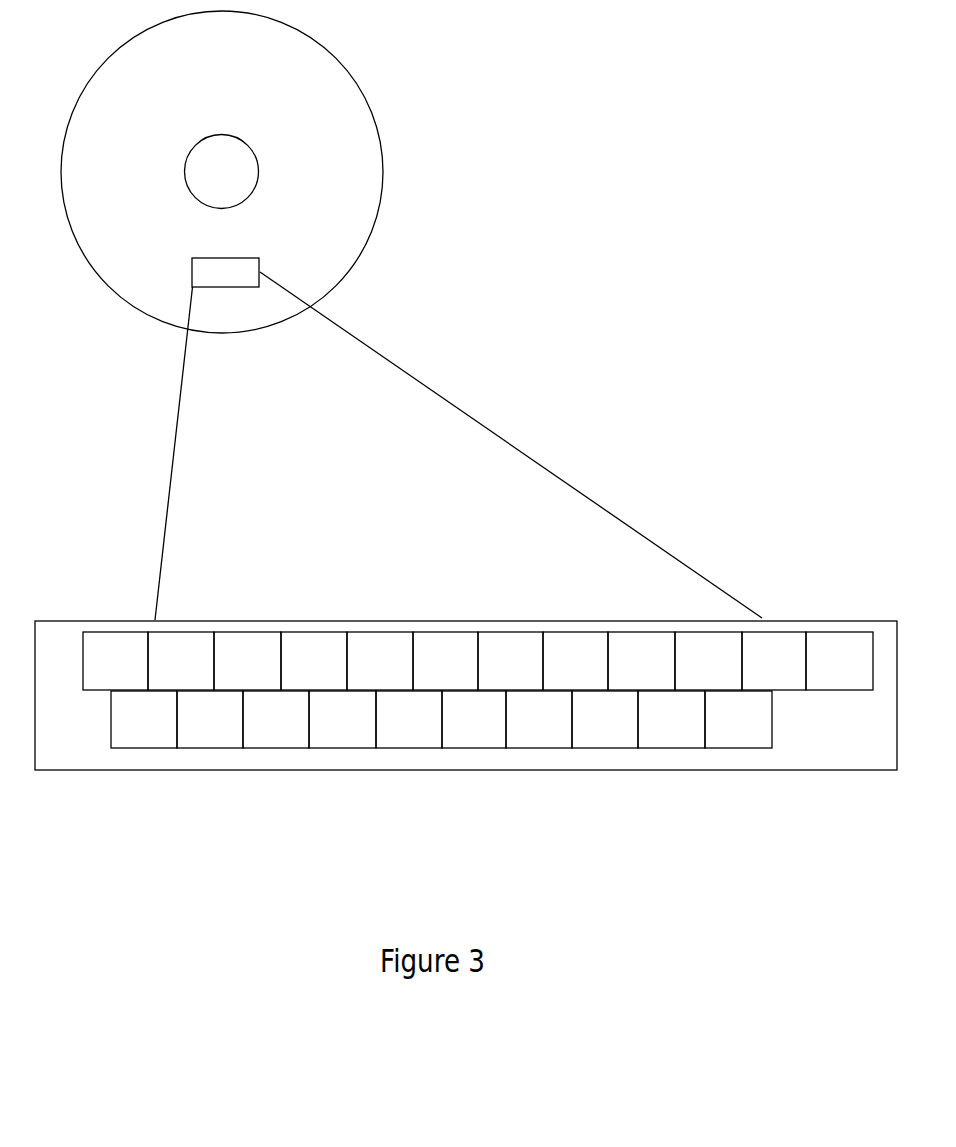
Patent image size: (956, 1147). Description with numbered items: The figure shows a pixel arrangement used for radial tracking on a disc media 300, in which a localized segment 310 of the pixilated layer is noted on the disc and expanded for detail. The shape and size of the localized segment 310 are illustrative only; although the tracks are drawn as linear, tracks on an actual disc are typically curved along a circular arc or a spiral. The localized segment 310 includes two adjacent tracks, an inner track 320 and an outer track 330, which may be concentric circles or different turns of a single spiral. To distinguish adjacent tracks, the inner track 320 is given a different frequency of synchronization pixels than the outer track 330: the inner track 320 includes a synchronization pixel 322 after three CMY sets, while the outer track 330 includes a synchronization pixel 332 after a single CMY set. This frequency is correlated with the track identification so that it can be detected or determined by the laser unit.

The disc media 300 is at (285, 172).
The localized segment 310 is at (330, 175).
The inner track 320 is at (392, 439).
The synchronization pixel 322 is at (466, 656).
The outer track 330 is at (455, 727).
The synchronization pixel 332 is at (441, 788).